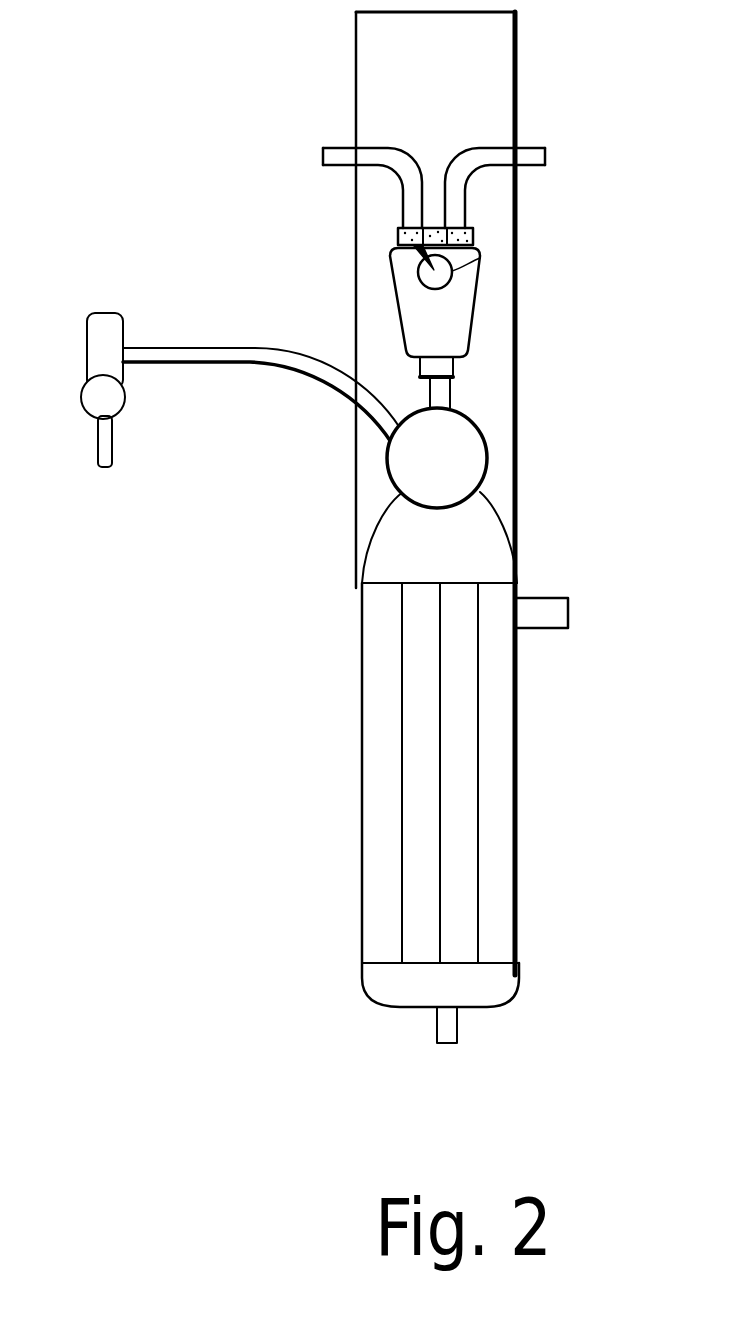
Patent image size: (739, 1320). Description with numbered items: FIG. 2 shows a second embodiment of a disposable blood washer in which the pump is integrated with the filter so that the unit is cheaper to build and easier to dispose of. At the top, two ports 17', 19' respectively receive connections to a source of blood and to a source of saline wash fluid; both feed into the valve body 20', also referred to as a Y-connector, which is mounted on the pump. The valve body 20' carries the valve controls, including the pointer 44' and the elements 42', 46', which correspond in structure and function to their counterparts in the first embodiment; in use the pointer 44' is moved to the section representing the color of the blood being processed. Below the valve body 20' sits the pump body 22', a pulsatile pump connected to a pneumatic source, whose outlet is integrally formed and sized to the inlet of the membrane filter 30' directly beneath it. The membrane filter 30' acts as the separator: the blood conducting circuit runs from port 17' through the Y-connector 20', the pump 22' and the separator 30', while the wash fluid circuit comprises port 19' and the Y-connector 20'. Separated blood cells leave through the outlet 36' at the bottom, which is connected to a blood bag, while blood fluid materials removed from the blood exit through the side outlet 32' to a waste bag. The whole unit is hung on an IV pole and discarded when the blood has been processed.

The port 17' is at (343, 149).
The port 19' is at (534, 149).
The element 46' is at (487, 206).
The pointer 44' is at (363, 251).
The element 42' is at (538, 244).
The valve body 20' is at (484, 328).
The pump body 22' is at (487, 446).
The outlet 32' is at (570, 573).
The membrane filter 30' is at (377, 749).
The outlet 36' is at (497, 1048).